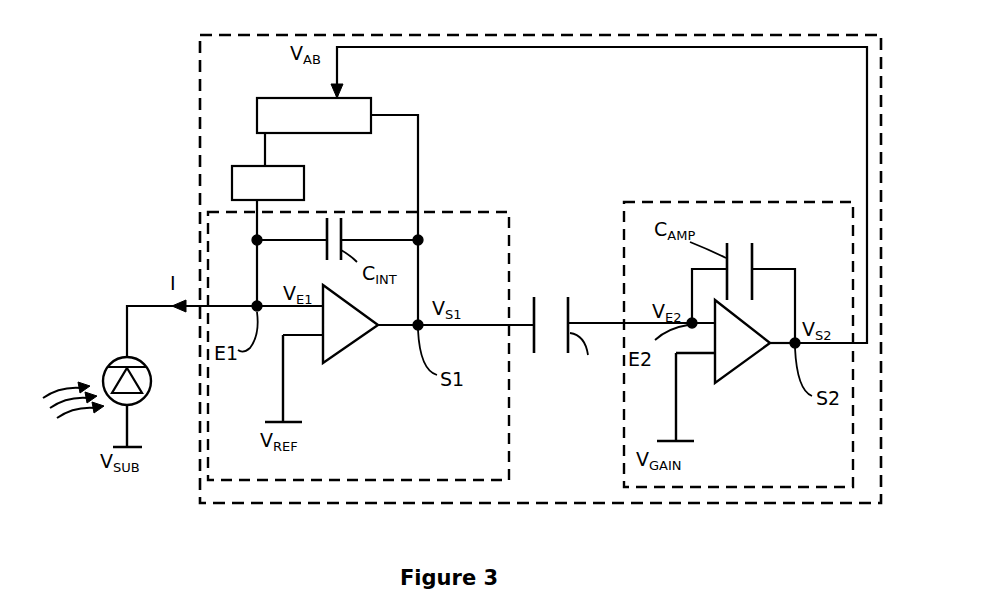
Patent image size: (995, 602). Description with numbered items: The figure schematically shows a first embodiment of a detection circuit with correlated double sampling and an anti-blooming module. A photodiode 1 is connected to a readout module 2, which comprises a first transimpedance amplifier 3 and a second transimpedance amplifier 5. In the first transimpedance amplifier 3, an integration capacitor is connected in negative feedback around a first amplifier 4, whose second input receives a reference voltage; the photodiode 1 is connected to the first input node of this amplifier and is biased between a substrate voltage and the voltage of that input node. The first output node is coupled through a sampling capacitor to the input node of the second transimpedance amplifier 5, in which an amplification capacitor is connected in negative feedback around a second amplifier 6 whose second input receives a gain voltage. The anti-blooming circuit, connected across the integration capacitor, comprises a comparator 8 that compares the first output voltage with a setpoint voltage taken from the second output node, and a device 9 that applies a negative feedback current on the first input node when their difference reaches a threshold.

The photodiode 1 is at (149, 390).
The readout module 2 is at (195, 88).
The first transimpedance amplifier 3 is at (509, 272).
The first amplifier 4 is at (356, 344).
The second transimpedance amplifier 5 is at (624, 220).
The second amplifier 6 is at (730, 372).
The comparator 8 is at (371, 108).
The device for applying a negative feedback current 9 is at (232, 184).